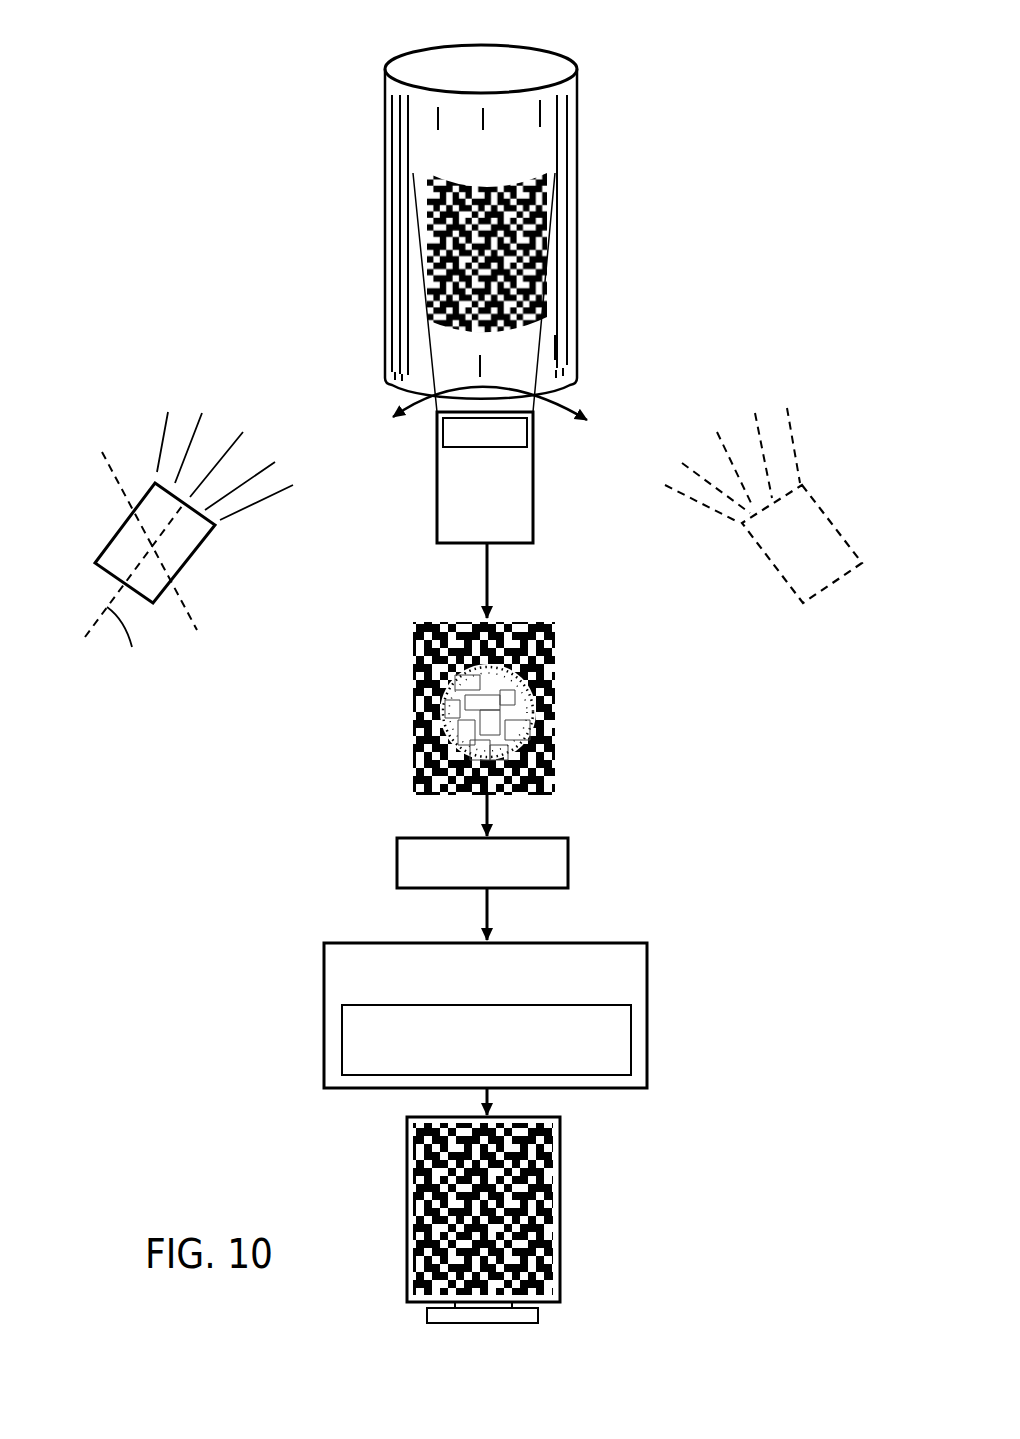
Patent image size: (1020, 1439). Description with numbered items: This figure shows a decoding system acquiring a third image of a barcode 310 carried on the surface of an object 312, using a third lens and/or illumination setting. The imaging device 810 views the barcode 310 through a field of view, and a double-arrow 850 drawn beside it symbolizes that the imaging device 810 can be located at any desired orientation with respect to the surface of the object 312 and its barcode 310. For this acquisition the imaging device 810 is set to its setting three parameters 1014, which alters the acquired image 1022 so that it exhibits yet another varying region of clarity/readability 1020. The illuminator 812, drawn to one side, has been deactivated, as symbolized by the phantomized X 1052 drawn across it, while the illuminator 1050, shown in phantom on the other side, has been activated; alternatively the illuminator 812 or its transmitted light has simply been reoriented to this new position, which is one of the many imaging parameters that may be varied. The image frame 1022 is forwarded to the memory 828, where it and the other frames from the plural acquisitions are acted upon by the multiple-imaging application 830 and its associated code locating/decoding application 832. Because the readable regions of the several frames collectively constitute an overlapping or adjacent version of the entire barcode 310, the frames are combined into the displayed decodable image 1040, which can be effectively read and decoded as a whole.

The object 312 is at (520, 70).
The barcode 310 is at (495, 188).
The double-arrow 850 is at (553, 408).
The setting 3 parameters 1014 is at (480, 447).
The imaging device 810 is at (533, 497).
The illuminator 812 is at (185, 563).
The phantomized X 1052 is at (144, 562).
The illuminator 1050 is at (770, 568).
The acquired image 1022 is at (555, 665).
The region of clarity/readability 1020 is at (537, 695).
The memory 828 is at (532, 890).
The multiple-imaging application 830 is at (647, 952).
The code locating/decoding application 832 is at (631, 1030).
The displayed decodable image 1040 is at (545, 1190).